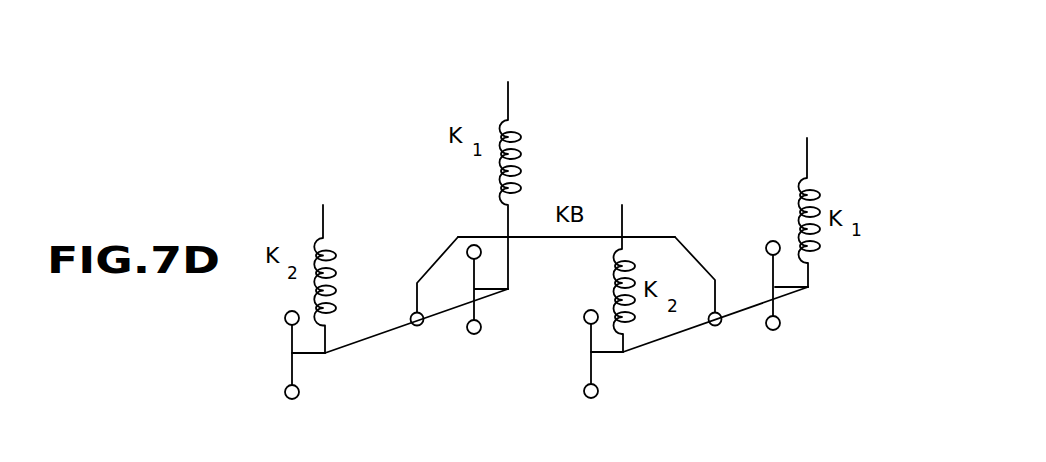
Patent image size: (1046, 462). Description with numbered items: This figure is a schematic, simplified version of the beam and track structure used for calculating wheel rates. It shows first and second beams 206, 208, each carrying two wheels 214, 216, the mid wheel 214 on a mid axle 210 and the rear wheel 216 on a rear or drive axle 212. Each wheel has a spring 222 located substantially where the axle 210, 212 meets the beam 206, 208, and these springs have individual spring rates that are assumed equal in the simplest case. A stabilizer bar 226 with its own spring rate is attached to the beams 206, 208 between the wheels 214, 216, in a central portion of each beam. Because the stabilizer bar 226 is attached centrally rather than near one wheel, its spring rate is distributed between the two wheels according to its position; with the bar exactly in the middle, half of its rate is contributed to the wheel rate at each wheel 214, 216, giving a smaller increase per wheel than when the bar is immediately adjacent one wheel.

The first beam 206 is at (375, 333).
The second beam 208 is at (699, 326).
The mid axle 210 is at (497, 289).
The rear or drive axle 212 is at (307, 356).
The mid wheel 214 is at (480, 311).
The rear wheel 216 is at (291, 367).
The spring 222 is at (326, 258).
The stabilizer bar 226 is at (536, 237).